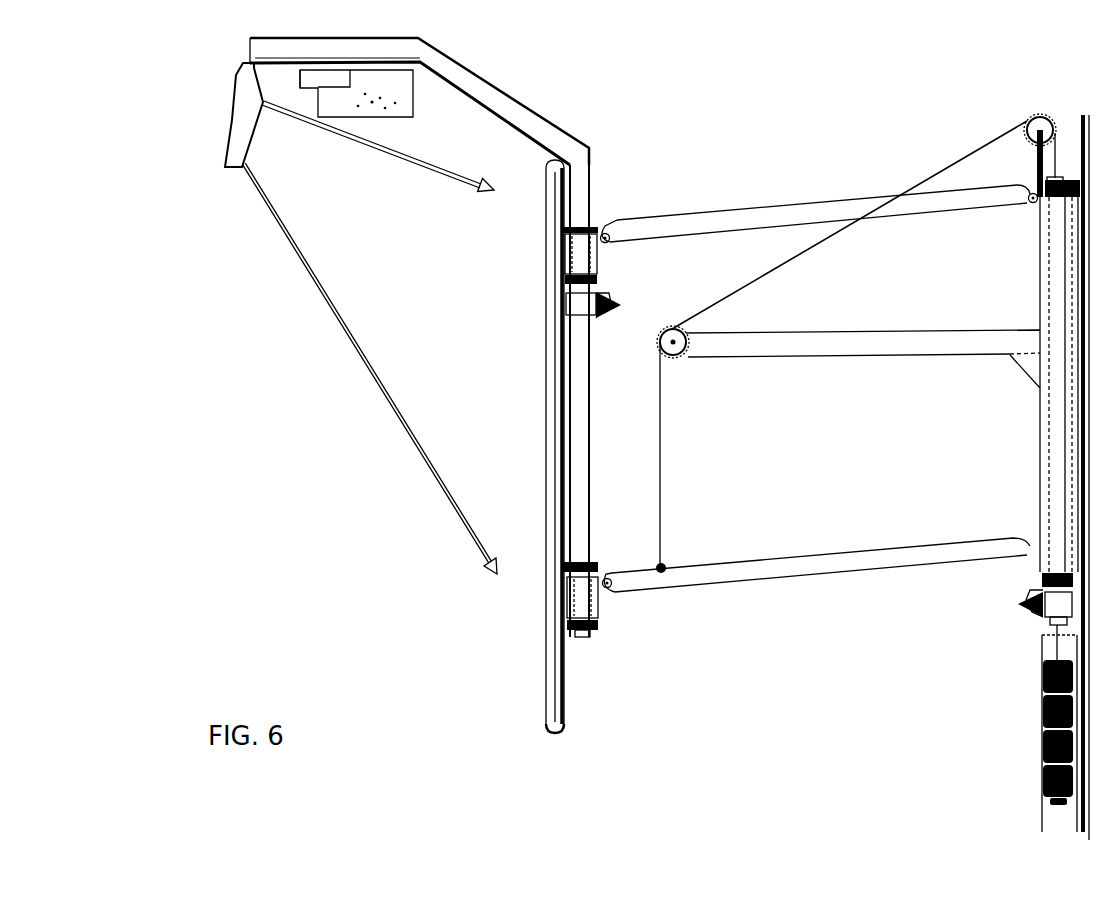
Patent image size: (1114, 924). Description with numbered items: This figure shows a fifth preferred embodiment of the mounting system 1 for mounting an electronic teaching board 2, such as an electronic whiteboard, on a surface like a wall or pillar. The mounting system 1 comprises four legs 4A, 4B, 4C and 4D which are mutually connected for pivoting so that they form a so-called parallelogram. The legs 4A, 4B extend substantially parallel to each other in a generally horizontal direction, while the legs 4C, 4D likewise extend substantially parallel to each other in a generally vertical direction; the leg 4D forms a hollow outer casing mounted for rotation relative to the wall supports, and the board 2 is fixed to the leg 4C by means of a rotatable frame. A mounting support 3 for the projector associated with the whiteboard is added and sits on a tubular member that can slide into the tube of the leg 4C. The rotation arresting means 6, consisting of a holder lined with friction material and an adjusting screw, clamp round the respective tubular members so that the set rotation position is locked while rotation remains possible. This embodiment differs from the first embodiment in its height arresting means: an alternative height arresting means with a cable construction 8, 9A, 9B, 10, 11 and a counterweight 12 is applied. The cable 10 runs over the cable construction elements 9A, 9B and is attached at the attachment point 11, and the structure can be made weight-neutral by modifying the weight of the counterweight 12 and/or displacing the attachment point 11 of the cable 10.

The mounting system 1 is at (788, 82).
The electronic teaching board 2 is at (543, 382).
The mounting support 3 is at (222, 172).
The leg 4A is at (818, 205).
The leg 4B is at (850, 578).
The leg 4C is at (596, 421).
The leg 4D is at (1036, 287).
The second rotation arresting means 6 is at (608, 319).
The cable construction 8 is at (875, 362).
The cable construction 9A is at (668, 326).
The cable construction 9B is at (1038, 113).
The cable 10 is at (806, 257).
The attachment point 11 is at (655, 566).
The counterweight 12 is at (1040, 713).